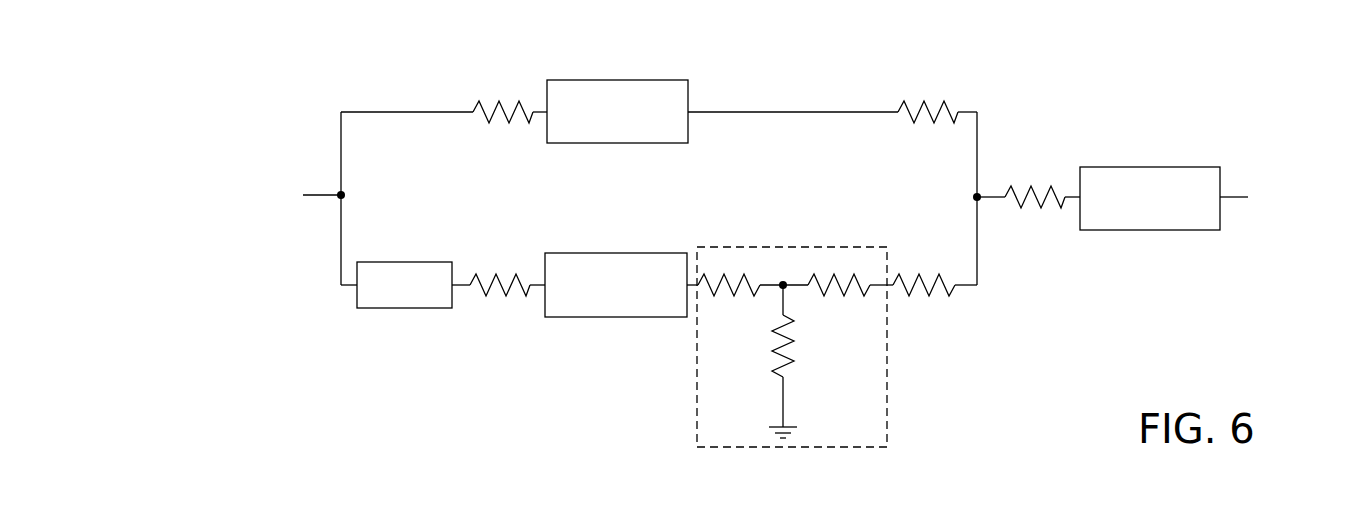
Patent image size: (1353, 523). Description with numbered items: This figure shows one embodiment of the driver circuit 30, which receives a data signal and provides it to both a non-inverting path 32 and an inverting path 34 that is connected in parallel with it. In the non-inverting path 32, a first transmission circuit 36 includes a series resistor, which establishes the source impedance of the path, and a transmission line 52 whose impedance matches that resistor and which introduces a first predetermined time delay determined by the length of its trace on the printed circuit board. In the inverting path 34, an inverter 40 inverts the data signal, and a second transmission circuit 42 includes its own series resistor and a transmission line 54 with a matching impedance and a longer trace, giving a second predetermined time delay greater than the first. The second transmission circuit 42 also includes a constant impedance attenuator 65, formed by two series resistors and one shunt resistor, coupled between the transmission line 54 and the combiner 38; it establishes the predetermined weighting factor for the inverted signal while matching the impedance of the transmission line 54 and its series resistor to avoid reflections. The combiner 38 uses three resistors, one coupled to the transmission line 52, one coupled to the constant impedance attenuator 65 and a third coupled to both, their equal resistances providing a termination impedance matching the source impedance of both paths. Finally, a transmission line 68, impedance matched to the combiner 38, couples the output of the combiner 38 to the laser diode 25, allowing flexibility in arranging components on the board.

The laser diode 25 is at (1275, 200).
The driver circuit 30 is at (1214, 64).
The non-inverting path 32 is at (373, 92).
The inverting path 34 is at (367, 330).
The first transmission circuit 36 is at (603, 67).
The combiner 38 is at (1006, 259).
The inverter 40 is at (382, 262).
The second transmission circuit 42 is at (627, 360).
The transmission line 52 is at (570, 143).
The transmission line 54 is at (637, 253).
The constant impedance attenuator 65 is at (887, 385).
The transmission line 68 is at (1185, 167).